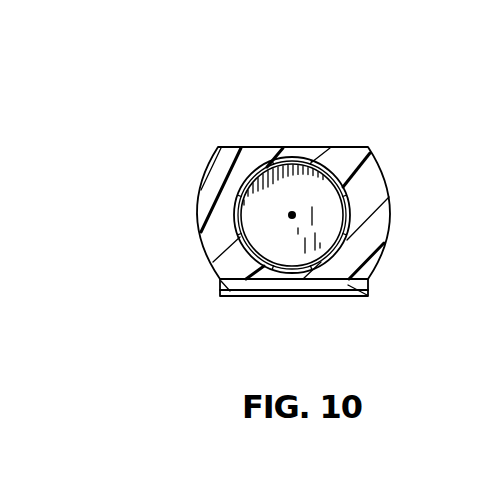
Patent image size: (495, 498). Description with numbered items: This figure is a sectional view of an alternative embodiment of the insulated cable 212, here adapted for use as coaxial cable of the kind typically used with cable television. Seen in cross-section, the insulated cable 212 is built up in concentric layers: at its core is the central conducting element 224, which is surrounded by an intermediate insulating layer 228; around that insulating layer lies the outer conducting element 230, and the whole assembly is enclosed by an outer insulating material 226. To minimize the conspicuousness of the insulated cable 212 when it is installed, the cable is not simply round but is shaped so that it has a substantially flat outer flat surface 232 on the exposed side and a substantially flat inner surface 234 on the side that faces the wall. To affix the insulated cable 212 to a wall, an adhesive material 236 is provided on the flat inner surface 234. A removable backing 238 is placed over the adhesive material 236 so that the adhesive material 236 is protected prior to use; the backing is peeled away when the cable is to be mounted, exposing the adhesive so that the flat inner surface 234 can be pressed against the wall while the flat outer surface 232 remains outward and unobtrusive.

The insulated cable 212 is at (220, 145).
The central conducting element 224 is at (292, 212).
The outer insulating material 226 is at (222, 238).
The intermediate insulating layer 228 is at (257, 208).
The outer conducting element 230 is at (349, 218).
The outer flat surface 232 is at (358, 150).
The inner surface 234 is at (222, 297).
The adhesive material 236 is at (350, 296).
The removable backing 238 is at (302, 290).